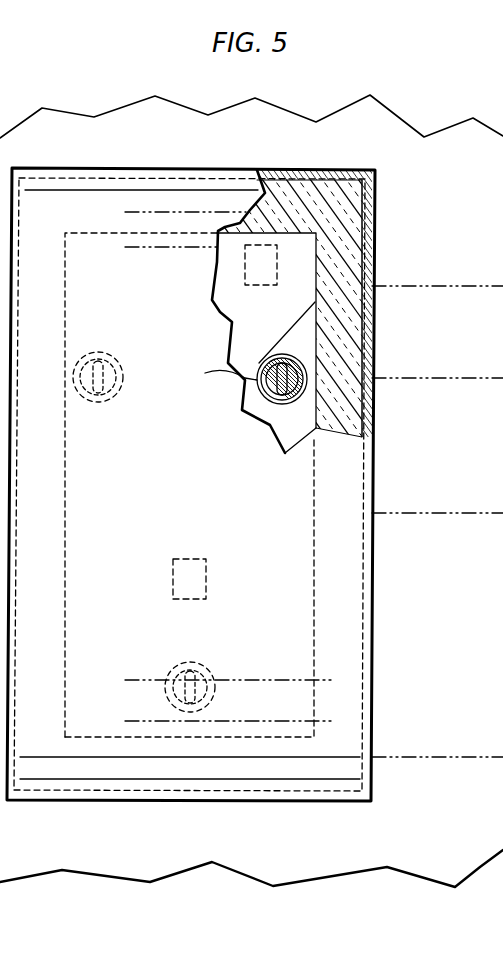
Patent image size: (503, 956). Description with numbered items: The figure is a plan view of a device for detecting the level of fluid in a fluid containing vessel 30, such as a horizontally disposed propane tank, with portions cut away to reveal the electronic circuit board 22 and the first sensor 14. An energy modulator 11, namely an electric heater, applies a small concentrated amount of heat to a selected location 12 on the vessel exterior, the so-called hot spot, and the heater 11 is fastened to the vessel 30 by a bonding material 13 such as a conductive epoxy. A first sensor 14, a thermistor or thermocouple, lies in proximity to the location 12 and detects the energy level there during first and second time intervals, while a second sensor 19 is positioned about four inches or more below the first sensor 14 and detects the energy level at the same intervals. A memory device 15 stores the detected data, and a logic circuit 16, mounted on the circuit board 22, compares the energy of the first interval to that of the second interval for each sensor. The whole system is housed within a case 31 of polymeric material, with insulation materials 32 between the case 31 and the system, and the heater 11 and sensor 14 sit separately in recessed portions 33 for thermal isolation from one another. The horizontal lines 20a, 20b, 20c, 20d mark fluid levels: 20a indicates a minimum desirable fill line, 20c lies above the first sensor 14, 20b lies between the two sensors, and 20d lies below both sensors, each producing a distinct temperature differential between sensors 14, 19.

The energy modulator 11 is at (329, 383).
The selected location 12 is at (258, 432).
The bonding material 13 is at (76, 367).
The first sensor 14 is at (80, 391).
The memory device 15 is at (212, 578).
The logic circuit 16 is at (273, 184).
The second sensor 19 is at (170, 712).
The fluid level 20a is at (443, 378).
The fluid level 20b is at (443, 513).
The fluid level 20c is at (443, 286).
The liquid level 20d is at (442, 757).
The electronic circuit board 22 is at (307, 247).
The fluid containing vessel 30 is at (48, 151).
The case 31 is at (372, 213).
The insulation materials 32 is at (364, 267).
The recessed portions 33 is at (123, 378).